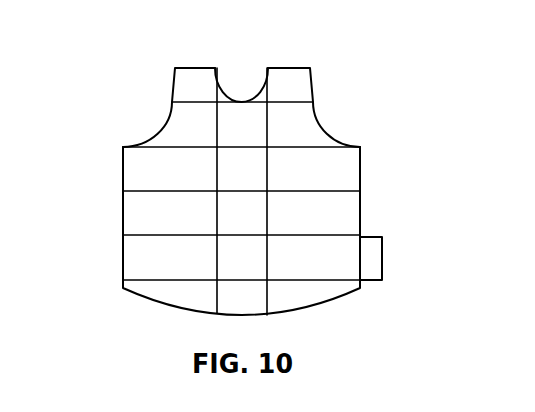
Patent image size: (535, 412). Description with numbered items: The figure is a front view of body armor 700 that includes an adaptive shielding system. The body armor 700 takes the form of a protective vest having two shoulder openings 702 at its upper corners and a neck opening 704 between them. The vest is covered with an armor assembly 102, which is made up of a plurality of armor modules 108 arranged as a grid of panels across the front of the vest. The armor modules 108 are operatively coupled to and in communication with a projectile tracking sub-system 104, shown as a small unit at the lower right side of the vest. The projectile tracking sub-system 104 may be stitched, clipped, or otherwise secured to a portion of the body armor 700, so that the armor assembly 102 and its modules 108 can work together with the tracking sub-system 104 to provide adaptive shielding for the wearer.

The body armor 700 is at (246, 185).
The shoulder openings 702 is at (148, 102).
The neck opening 704 is at (252, 80).
The armor assembly 102 is at (335, 172).
The armor modules 108 is at (345, 212).
The projectile tracking sub-system 104 is at (367, 257).